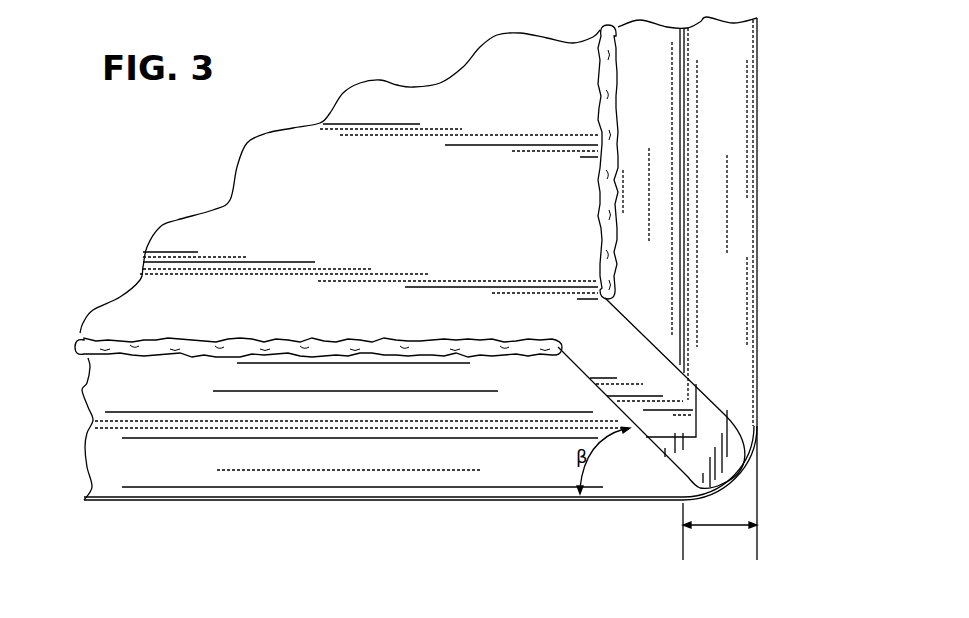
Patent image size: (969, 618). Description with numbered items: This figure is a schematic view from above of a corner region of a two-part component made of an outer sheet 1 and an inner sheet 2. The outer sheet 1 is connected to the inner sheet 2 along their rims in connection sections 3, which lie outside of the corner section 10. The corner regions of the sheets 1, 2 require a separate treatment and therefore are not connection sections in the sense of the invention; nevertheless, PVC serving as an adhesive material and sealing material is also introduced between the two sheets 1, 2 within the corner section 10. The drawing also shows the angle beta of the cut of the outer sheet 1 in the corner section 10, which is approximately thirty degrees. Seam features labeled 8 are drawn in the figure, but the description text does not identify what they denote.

The outer sheet 1 is at (727, 67).
The inner sheet 2 is at (330, 221).
The connection sections 3 is at (770, 172).
The weld seam 8 is at (388, 338).
The corner section 10 is at (694, 412).